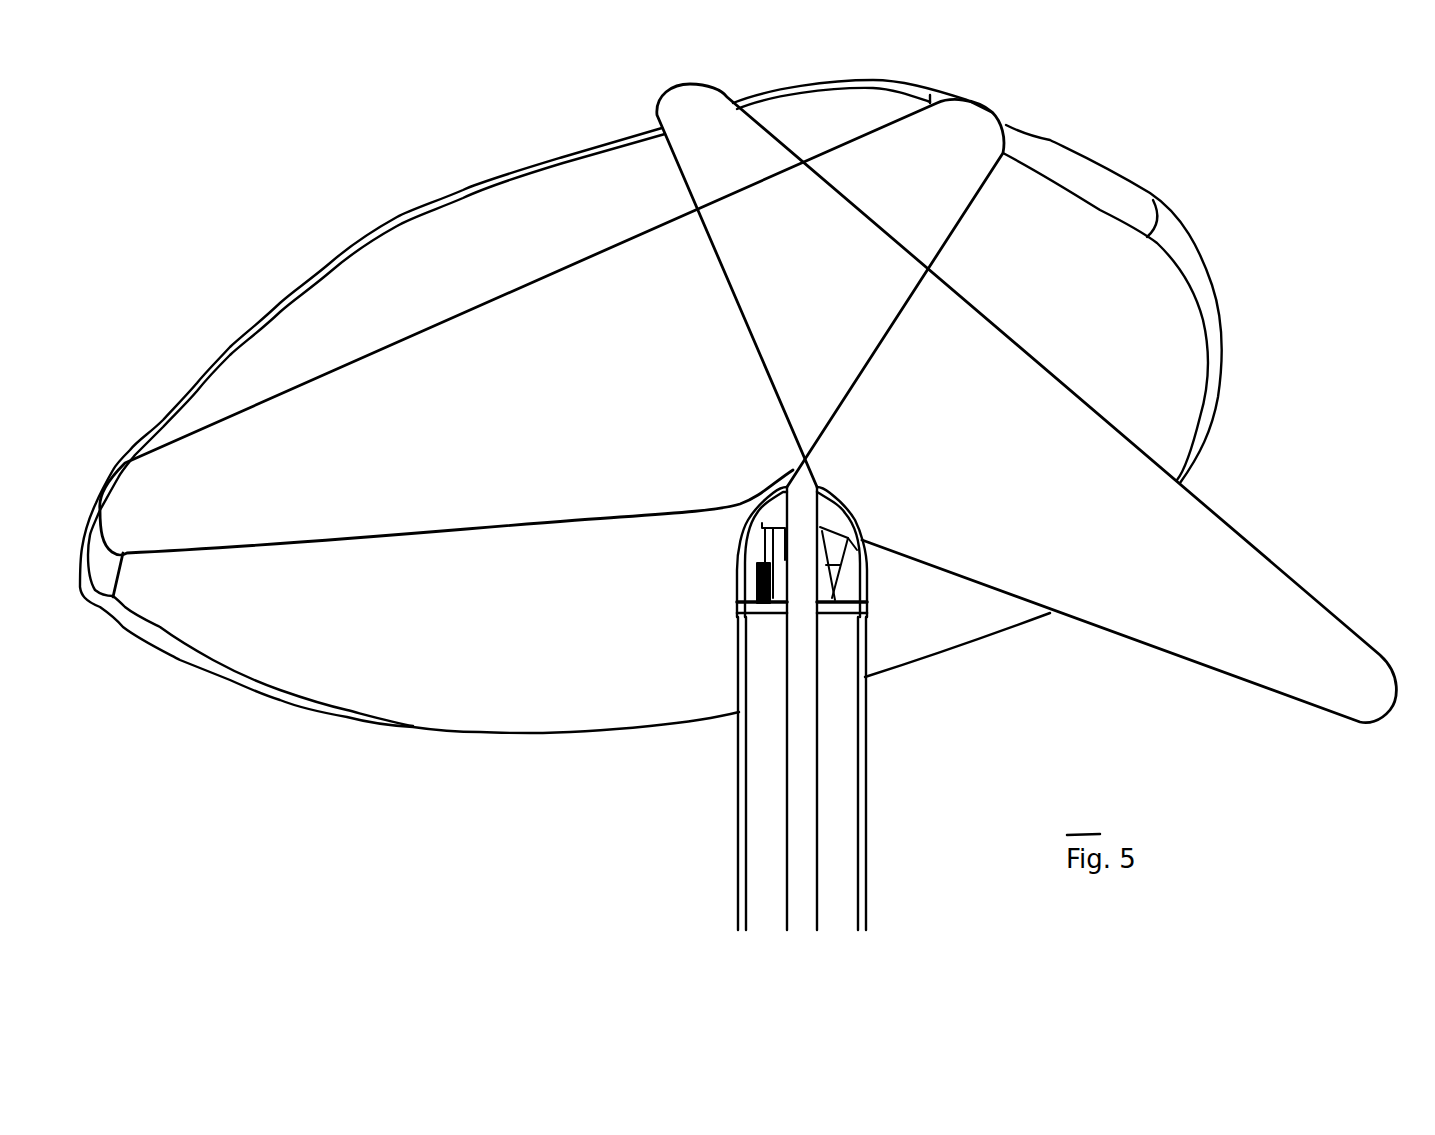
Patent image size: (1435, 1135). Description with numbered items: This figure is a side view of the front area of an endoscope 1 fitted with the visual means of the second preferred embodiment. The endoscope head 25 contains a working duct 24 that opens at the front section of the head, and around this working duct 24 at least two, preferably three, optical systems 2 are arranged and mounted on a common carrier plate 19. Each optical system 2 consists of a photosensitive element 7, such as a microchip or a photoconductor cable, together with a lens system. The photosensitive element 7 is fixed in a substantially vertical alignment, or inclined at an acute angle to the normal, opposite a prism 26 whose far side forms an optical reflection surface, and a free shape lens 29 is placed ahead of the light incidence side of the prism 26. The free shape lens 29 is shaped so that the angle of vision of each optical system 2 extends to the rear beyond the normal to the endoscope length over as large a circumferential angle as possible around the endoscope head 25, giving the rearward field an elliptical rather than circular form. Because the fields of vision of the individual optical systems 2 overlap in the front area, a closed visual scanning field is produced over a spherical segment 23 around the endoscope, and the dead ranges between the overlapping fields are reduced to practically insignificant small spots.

The umbrella canopy 1 is at (112, 603).
The optical system 2 is at (748, 557).
The photosensitive element 7 is at (763, 592).
The carrier plate 19 is at (862, 599).
The spherical segment 23 is at (1128, 168).
The working duct 24 is at (803, 737).
The endoscope head 25 is at (854, 494).
The prism 26 is at (862, 563).
The free shape lens 29 is at (833, 532).